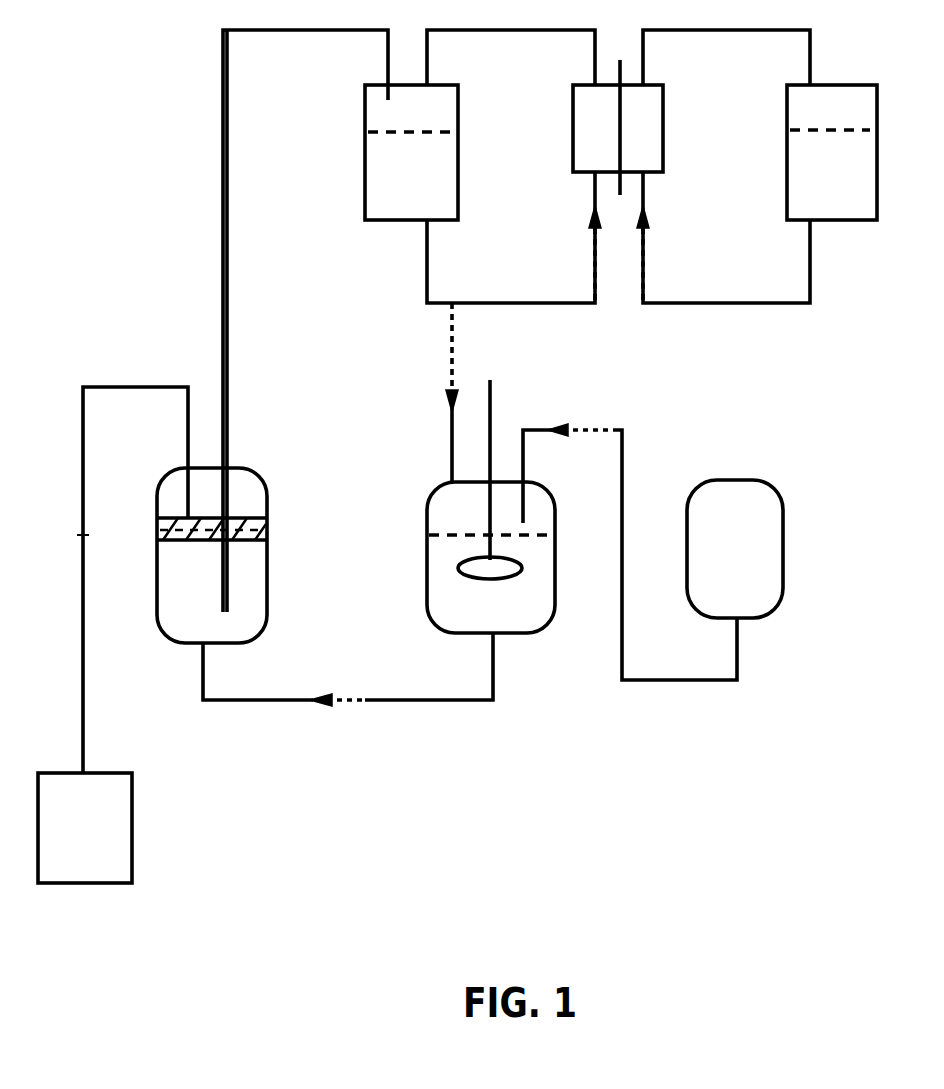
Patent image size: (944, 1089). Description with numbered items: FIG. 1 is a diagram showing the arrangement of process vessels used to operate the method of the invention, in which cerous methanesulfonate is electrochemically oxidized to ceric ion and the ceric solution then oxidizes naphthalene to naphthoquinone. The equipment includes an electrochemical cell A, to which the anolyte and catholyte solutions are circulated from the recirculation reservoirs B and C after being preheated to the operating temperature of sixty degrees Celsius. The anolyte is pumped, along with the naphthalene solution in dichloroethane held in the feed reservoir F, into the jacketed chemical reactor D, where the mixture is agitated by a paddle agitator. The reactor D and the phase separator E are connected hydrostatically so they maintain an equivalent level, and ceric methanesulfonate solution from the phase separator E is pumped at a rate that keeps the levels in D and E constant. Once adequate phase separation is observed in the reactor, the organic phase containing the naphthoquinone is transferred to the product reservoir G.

The electrochemical cell A is at (618, 127).
The anolyte recirculation reservoir B is at (411, 152).
The catholyte recirculation reservoir C is at (832, 152).
The jacketed chemical reactor D is at (471, 506).
The phase separator E is at (194, 336).
The feed reservoir F is at (735, 549).
The product reservoir G is at (85, 828).